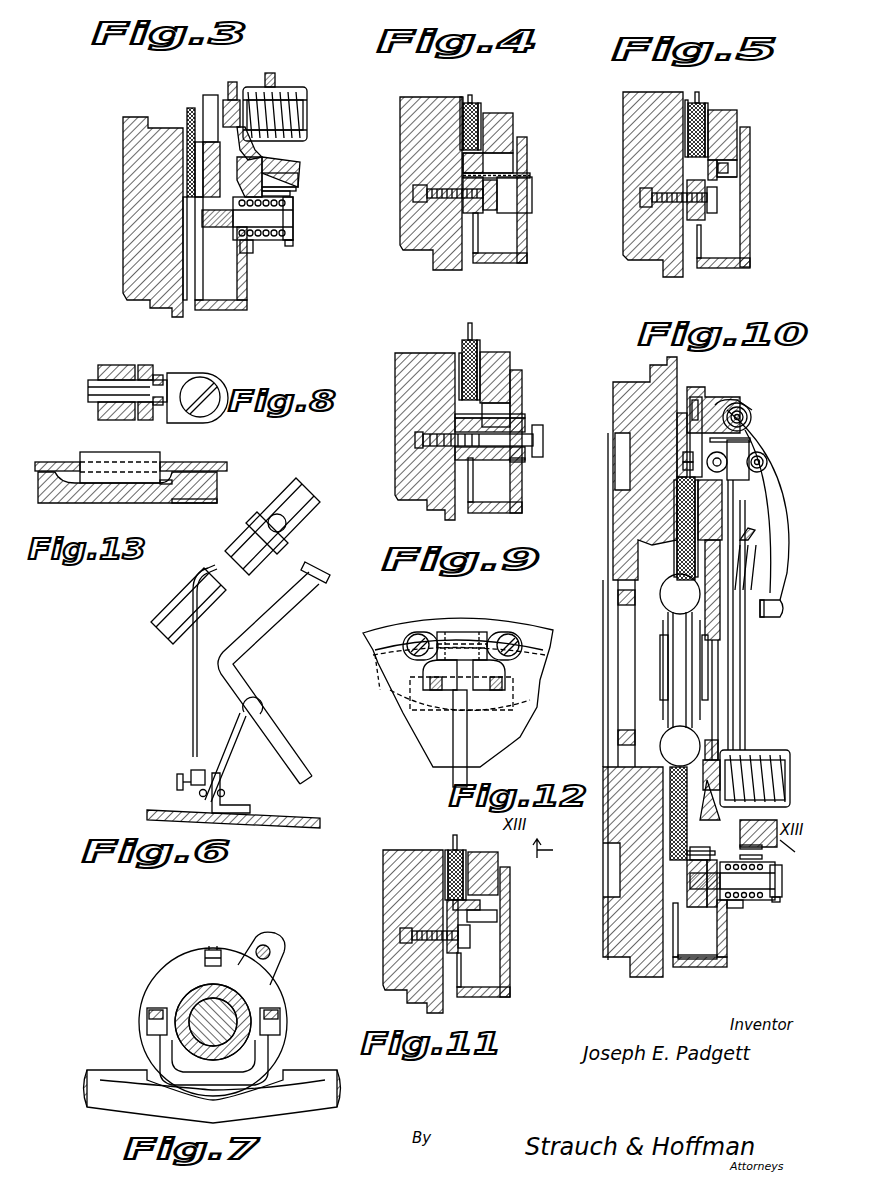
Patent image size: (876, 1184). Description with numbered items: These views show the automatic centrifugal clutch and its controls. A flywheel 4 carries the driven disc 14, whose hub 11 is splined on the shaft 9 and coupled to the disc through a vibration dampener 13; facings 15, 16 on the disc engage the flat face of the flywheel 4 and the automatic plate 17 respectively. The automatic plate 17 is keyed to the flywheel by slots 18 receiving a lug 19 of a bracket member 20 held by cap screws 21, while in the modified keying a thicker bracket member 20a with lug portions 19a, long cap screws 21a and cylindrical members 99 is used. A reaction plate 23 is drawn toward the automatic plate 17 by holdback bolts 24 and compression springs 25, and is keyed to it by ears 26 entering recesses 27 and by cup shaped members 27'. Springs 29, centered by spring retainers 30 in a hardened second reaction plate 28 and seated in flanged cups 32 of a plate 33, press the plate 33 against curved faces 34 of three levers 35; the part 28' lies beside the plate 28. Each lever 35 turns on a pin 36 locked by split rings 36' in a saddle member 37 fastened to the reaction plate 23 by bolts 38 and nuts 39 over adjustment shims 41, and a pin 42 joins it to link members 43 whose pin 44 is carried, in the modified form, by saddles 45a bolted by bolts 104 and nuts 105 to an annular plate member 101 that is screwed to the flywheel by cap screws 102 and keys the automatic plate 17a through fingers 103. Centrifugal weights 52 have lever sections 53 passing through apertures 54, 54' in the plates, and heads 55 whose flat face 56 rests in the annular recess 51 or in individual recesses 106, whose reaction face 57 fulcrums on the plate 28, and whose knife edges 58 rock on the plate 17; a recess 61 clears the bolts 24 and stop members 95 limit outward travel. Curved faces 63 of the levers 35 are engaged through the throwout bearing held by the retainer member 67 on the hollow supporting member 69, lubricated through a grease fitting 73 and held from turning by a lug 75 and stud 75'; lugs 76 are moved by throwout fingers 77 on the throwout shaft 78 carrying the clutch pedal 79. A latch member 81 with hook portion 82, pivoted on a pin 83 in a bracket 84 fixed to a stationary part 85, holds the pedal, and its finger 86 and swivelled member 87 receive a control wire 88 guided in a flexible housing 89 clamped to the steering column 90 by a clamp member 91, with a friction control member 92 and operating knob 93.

In FIG. 3, the flywheel 4 is at (124, 119).
In FIG. 4, the flywheel 4 is at (412, 123).
In FIG. 5, the flywheel 4 is at (635, 147).
In FIG. 9, the flywheel 4 is at (412, 383).
In FIG. 11, the flywheel 4 is at (392, 878).
In FIG. 10, the flywheel 4 is at (645, 383).
In FIG. 7, the shaft 9 is at (193, 1030).
In FIG. 10, the hub 11 is at (664, 690).
In FIG. 10, the vibration dampener 13 is at (698, 723).
In FIG. 3, the driven disc 14 is at (187, 112).
In FIG. 4, the driven disc 14 is at (473, 100).
In FIG. 5, the driven disc 14 is at (697, 102).
In FIG. 9, the driven disc 14 is at (472, 343).
In FIG. 11, the driven disc 14 is at (455, 853).
In FIG. 10, the driven disc 14 is at (690, 563).
In FIG. 4, the facing 15 is at (465, 100).
In FIG. 5, the facing 15 is at (692, 105).
In FIG. 9, the facing 15 is at (462, 350).
In FIG. 11, the facing 15 is at (448, 853).
In FIG. 10, the facing 15 is at (677, 493).
In FIG. 4, the facing 16 is at (479, 110).
In FIG. 5, the facing 16 is at (707, 110).
In FIG. 9, the facing 16 is at (478, 350).
In FIG. 11, the facing 16 is at (463, 858).
In FIG. 10, the facing 16 is at (728, 528).
In FIG. 3, the automatic plate 17 is at (205, 103).
In FIG. 4, the automatic plate 17 is at (510, 117).
In FIG. 5, the automatic plate 17 is at (737, 115).
In FIG. 9, the automatic plate 17 is at (505, 355).
In FIG. 11, the automatic plate 17 is at (483, 873).
In FIG. 13, the automatic plate 17a is at (218, 493).
In FIG. 12, the automatic plate 17a is at (525, 722).
In FIG. 10, the automatic plate 17a is at (690, 893).
In FIG. 4, the slots 18 is at (510, 158).
In FIG. 9, the slots 18 is at (497, 408).
In FIG. 11, the slots 18 is at (503, 897).
In FIG. 4, the lug 19 is at (523, 172).
In FIG. 9, the lug portions 19a is at (517, 420).
In FIG. 4, the bracket member 20 is at (480, 213).
In FIG. 5, the bracket member 20 is at (697, 218).
In FIG. 9, the bracket members 20a is at (468, 458).
In FIG. 4, the cap screws 21 is at (495, 197).
In FIG. 5, the cap screws 21 is at (710, 205).
In FIG. 9, the cap screws 21a is at (538, 458).
In FIG. 3, the reaction plate 23 is at (247, 305).
In FIG. 4, the reaction plate 23 is at (527, 256).
In FIG. 5, the reaction plate 23 is at (750, 233).
In FIG. 9, the reaction plate 23 is at (522, 383).
In FIG. 12, the reaction plate 23 is at (540, 648).
In FIG. 11, the reaction plate 23 is at (510, 952).
In FIG. 10, the reaction plate 23 is at (727, 958).
In FIG. 3, the holdback bolts 24 is at (293, 218).
In FIG. 10, the holdback bolts 24 is at (782, 893).
In FIG. 3, the compression springs 25 is at (273, 236).
In FIG. 10, the compression springs 25 is at (762, 900).
In FIG. 5, the ears 26 is at (737, 177).
In FIG. 5, the recesses 27 is at (751, 161).
In FIG. 4, the cup shaped members 27' is at (531, 206).
In FIG. 3, the second reaction plate 28 is at (229, 106).
In FIG. 13, the second reaction plate 28 is at (131, 453).
In FIG. 10, the second reaction plate 28 is at (746, 620).
In FIG. 10, the rod end 28' is at (769, 463).
In FIG. 3, the springs 29 is at (287, 110).
In FIG. 10, the springs 29 is at (730, 567).
In FIG. 3, the spring retainers 30 is at (228, 110).
In FIG. 10, the spring retainers 30 is at (717, 750).
In FIG. 3, the flanged cups 32 is at (307, 93).
In FIG. 10, the flanged cups 32 is at (767, 540).
In FIG. 3, the plate 33 is at (272, 82).
In FIG. 10, the plate 33 is at (755, 530).
In FIG. 10, the curved faces 34 is at (762, 617).
In FIG. 8, the levers 35 is at (115, 367).
In FIG. 12, the levers 35 is at (453, 772).
In FIG. 10, the levers 35 is at (770, 492).
In FIG. 8, the pin 36 is at (109, 386).
In FIG. 12, the pin 36 is at (462, 629).
In FIG. 10, the pin 36 is at (759, 407).
In FIG. 8, the split rings 36' is at (168, 374).
In FIG. 8, the saddle member 37 is at (145, 365).
In FIG. 12, the saddle member 37 is at (485, 635).
In FIG. 10, the saddle member 37 is at (727, 408).
In FIG. 8, the bolts 38 is at (200, 388).
In FIG. 12, the bolts 38 is at (417, 640).
In FIG. 10, the bolts 38 is at (753, 417).
In FIG. 10, the nuts 39 is at (695, 410).
In FIG. 10, the adjustment shims 41 is at (713, 410).
In FIG. 12, the pin 42 is at (445, 690).
In FIG. 10, the pin 42 is at (767, 460).
In FIG. 12, the link members 43 is at (480, 700).
In FIG. 10, the link members 43 is at (733, 457).
In FIG. 10, the pin 44 is at (737, 437).
In FIG. 10, the saddles 45a is at (692, 440).
In FIG. 3, the annular recess 51 is at (170, 200).
In FIG. 3, the centrifugal weights 52 is at (300, 167).
In FIG. 10, the centrifugal weights 52 is at (762, 847).
In FIG. 3, the lever section 53 is at (280, 203).
In FIG. 13, the lever section 53 is at (130, 456).
In FIG. 10, the lever section 53 is at (775, 870).
In FIG. 3, the apertures 54 is at (307, 218).
In FIG. 3, the apertures 54' is at (299, 175).
In FIG. 3, the heads 55 is at (180, 184).
In FIG. 13, the heads 55 is at (135, 478).
In FIG. 10, the heads 55 is at (720, 848).
In FIG. 3, the flat face 56 is at (237, 162).
In FIG. 10, the flat face 56 is at (723, 825).
In FIG. 3, the reaction face 57 is at (262, 167).
In FIG. 10, the reaction face 57 is at (767, 818).
In FIG. 3, the knife-like edges 58 is at (223, 180).
In FIG. 10, the knife-like edges 58 is at (715, 853).
In FIG. 3, the recess 61 is at (280, 193).
In FIG. 10, the recess 61 is at (762, 857).
In FIG. 10, the curved faces 63 is at (780, 610).
In FIG. 7, the retainer and reservoir member 67 is at (168, 978).
In FIG. 7, the hollow supporting member 69 is at (243, 1017).
In FIG. 7, the grease fitting 73 is at (213, 950).
In FIG. 7, the apertured lug 75 is at (261, 943).
In FIG. 7, the stud 75' is at (284, 943).
In FIG. 7, the lugs 76 is at (155, 1008).
In FIG. 7, the throwout fingers 77 is at (153, 1043).
In FIG. 7, the throwout shaft 78 is at (120, 1105).
In FIG. 6, the clutch pedal 79 is at (277, 617).
In FIG. 6, the latch member 81 is at (222, 748).
In FIG. 6, the hook portion 82 is at (252, 703).
In FIG. 6, the pin 83 is at (222, 790).
In FIG. 6, the bracket 84 is at (237, 810).
In FIG. 6, the stationary part 85 is at (277, 826).
In FIG. 6, the finger 86 is at (200, 793).
In FIG. 6, the apertured member 87 is at (193, 773).
In FIG. 6, the control wire 88 is at (177, 782).
In FIG. 6, the flexible housing 89 is at (230, 560).
In FIG. 6, the steering column 90 is at (168, 608).
In FIG. 6, the clamp member 91 is at (267, 537).
In FIG. 6, the friction control member 92 is at (287, 552).
In FIG. 6, the operating knob 93 is at (293, 535).
In FIG. 3, the stop members 95 is at (253, 253).
In FIG. 10, the stop members 95 is at (727, 930).
In FIG. 9, the cylindrical members 99 is at (520, 483).
In FIG. 12, the annular plate member 101 is at (403, 660).
In FIG. 11, the annular plate member 101 is at (455, 950).
In FIG. 10, the annular plate member 101 is at (690, 908).
In FIG. 11, the cap screws 102 is at (467, 935).
In FIG. 11, the fingers 103 is at (487, 907).
In FIG. 12, the bolts 104 is at (413, 690).
In FIG. 10, the bolts 104 is at (683, 457).
In FIG. 10, the nuts 105 is at (683, 467).
In FIG. 13, the recesses 106 is at (172, 481).
In FIG. 10, the recesses 106 is at (713, 965).